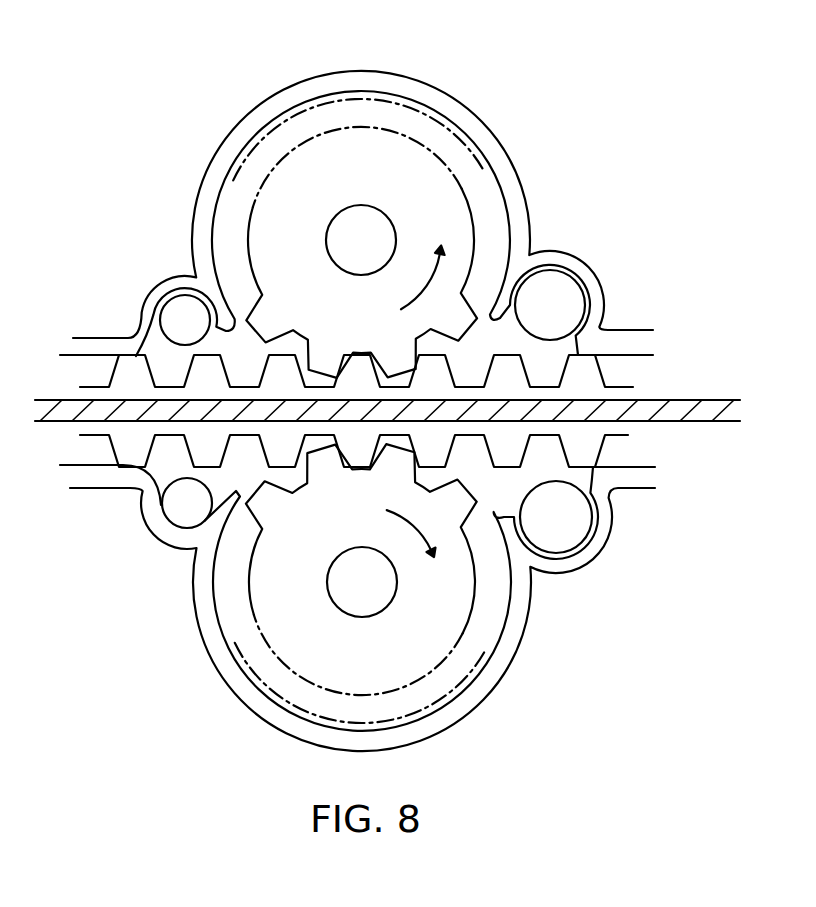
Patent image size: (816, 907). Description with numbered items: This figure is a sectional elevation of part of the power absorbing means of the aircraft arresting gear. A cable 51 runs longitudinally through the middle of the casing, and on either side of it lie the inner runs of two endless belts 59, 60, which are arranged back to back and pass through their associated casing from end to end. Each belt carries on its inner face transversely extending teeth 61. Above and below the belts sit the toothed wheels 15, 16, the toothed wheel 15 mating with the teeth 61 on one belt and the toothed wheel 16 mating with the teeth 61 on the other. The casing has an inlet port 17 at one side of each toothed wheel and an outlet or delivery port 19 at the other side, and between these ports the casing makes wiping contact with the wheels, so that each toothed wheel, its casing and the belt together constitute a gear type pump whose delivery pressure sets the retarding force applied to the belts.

The toothed wheel 15 is at (447, 207).
The toothed wheel 16 is at (290, 650).
The inlet port 17 is at (568, 289).
The outlet port 19 is at (177, 308).
The cable 51 is at (700, 408).
The endless belt 59 is at (128, 452).
The endless belt 60 is at (95, 387).
The teeth 61 is at (137, 367).